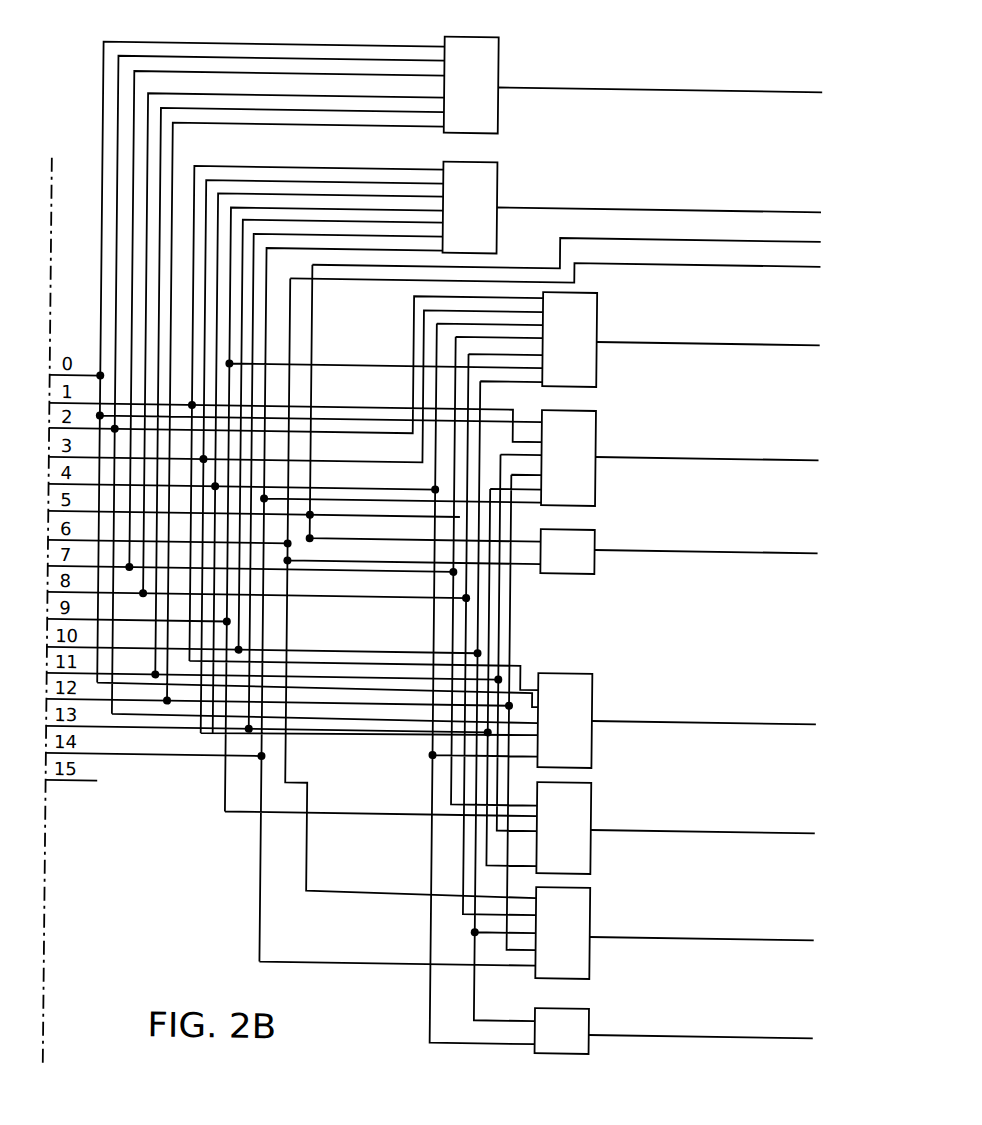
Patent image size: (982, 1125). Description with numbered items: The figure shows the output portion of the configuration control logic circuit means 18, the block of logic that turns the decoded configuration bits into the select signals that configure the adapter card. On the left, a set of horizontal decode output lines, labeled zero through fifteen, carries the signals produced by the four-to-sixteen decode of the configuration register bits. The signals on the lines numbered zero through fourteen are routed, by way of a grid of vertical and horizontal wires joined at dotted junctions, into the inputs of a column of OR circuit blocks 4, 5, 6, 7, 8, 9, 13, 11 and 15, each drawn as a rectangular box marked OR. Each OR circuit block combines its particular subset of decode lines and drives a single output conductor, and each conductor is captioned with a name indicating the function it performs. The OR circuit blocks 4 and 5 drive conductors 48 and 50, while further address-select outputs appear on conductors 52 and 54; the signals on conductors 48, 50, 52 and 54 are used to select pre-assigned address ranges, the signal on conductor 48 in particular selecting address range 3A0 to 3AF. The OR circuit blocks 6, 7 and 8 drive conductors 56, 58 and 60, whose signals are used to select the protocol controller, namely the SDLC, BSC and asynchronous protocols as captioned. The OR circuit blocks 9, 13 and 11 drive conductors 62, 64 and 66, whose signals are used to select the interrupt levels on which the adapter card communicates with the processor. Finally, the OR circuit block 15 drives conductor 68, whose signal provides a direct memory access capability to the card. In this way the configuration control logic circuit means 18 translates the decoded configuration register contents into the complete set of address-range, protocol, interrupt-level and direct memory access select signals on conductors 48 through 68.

The configuration control logic circuit means 18 is at (153, 21).
The OR circuit block 4 is at (499, 46).
The OR circuit block 5 is at (499, 163).
The OR circuit block 6 is at (600, 285).
The OR circuit block 7 is at (600, 408).
The OR circuit block 8 is at (600, 520).
The OR circuit block 9 is at (599, 675).
The OR circuit block 11 is at (600, 887).
The OR circuit block 13 is at (600, 782).
The OR circuit block 15 is at (600, 1003).
The conductor 48 is at (794, 82).
The conductor 50 is at (812, 203).
The conductor 52 is at (568, 240).
The conductor 54 is at (815, 262).
The conductor 56 is at (793, 339).
The conductor 58 is at (793, 446).
The conductor 60 is at (790, 546).
The conductor 62 is at (791, 716).
The conductor 64 is at (791, 822).
The conductor 66 is at (792, 930).
The conductor 68 is at (791, 1031).